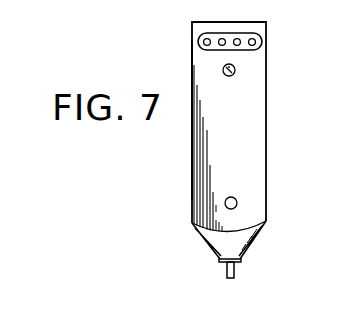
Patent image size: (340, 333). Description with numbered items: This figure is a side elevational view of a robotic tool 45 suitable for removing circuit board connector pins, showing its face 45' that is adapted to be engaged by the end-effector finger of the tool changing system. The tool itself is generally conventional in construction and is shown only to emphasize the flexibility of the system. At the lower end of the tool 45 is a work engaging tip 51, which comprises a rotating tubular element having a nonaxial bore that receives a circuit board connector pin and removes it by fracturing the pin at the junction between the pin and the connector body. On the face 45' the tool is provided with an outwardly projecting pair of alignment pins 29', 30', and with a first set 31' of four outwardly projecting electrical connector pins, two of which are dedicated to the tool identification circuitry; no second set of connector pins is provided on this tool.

The robotic tool 45 is at (193, 127).
The face of robotic tool 45' is at (158, 117).
The first set of electrical connector pins 31' is at (263, 45).
The alignment pin 29' is at (274, 74).
The alignment pin 30' is at (271, 198).
The work engaging tip 51 is at (235, 271).